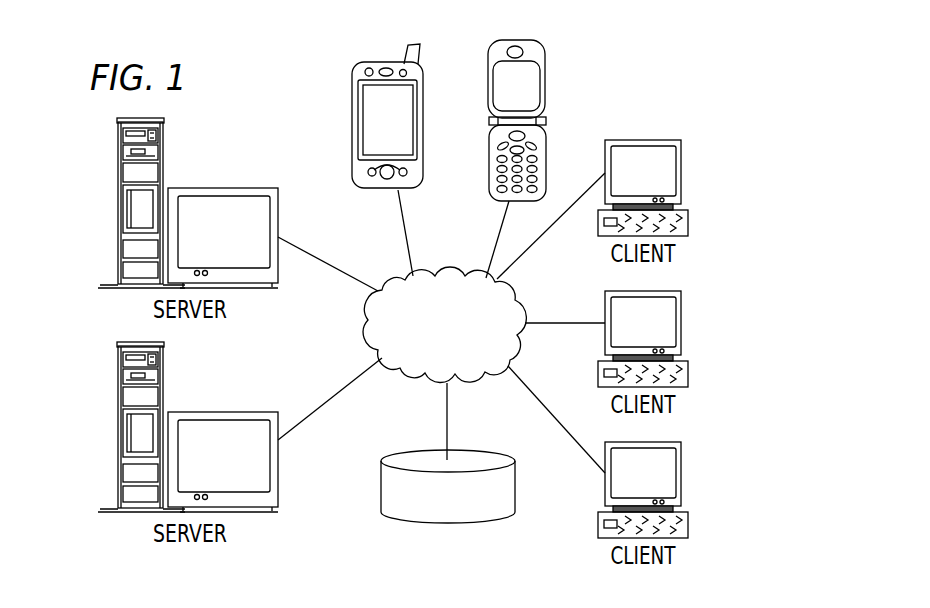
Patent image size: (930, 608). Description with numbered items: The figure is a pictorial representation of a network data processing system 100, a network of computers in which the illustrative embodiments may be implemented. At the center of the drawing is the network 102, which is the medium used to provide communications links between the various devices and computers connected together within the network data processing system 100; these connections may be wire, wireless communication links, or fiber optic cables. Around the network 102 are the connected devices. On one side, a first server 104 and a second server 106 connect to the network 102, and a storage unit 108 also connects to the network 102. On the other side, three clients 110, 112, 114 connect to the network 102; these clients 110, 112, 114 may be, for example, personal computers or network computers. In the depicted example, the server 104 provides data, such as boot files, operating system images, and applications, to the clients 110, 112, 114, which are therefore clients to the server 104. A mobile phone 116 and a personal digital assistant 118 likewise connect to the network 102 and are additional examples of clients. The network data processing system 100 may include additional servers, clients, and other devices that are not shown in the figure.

The network data processing system 100 is at (699, 71).
The network 102 is at (485, 379).
The server 104 is at (118, 205).
The server 106 is at (118, 434).
The storage unit 108 is at (430, 518).
The client 110 is at (681, 475).
The client 112 is at (681, 324).
The client 114 is at (681, 173).
The mobile phone 116 is at (545, 82).
The personal digital assistant 118 is at (352, 112).